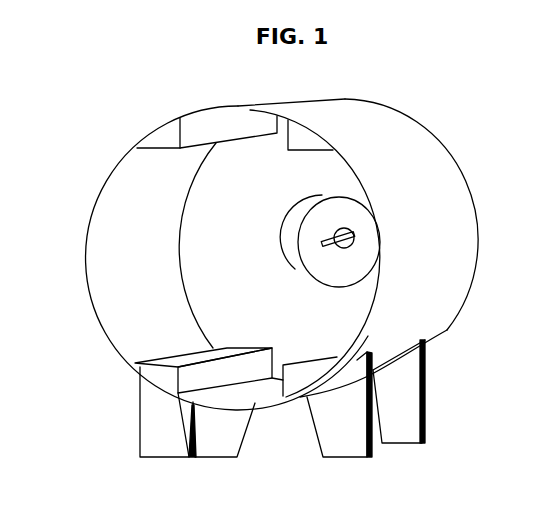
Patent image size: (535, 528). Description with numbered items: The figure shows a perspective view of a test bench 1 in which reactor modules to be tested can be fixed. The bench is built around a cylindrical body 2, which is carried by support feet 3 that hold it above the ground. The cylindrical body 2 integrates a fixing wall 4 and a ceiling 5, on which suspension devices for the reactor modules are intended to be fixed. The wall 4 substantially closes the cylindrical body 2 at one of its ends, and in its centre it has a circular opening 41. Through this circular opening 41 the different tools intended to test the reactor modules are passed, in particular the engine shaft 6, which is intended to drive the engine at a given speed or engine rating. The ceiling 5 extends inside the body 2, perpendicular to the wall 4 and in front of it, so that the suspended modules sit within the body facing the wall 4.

The drum device 1 is at (268, 276).
The cylindrical body 2 is at (450, 217).
The support feet 3 is at (217, 430).
The wall 4 is at (218, 237).
The circular opening 41 is at (314, 253).
The ceiling 5 is at (214, 129).
The engine shaft 6 is at (330, 246).